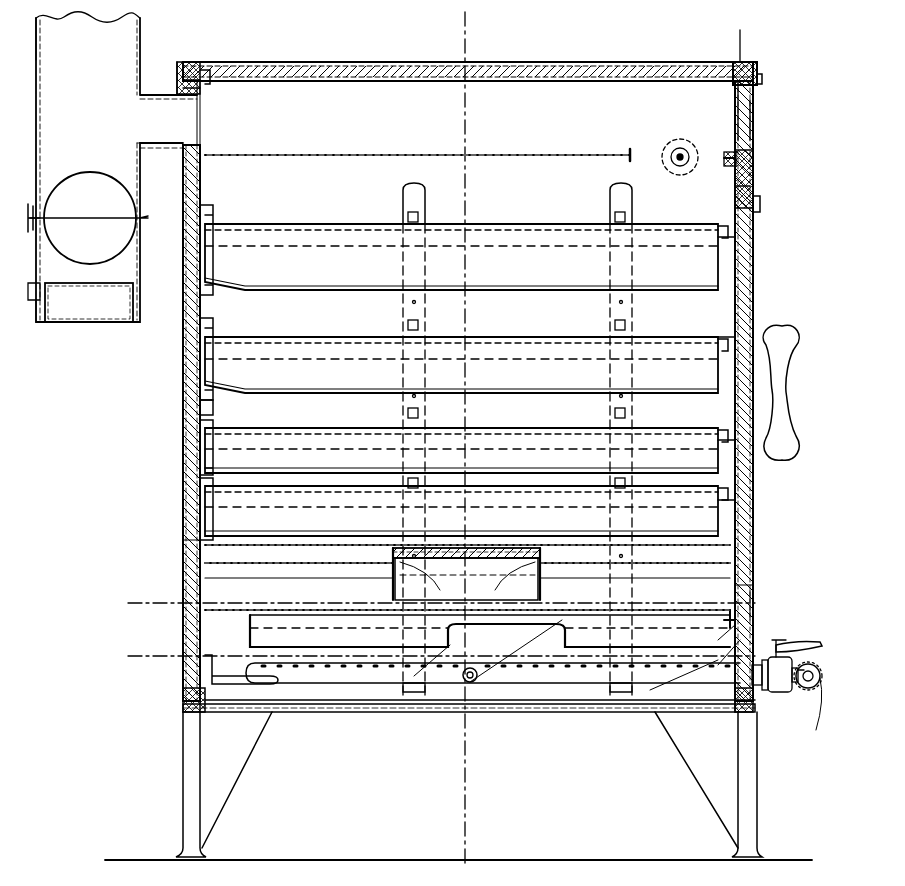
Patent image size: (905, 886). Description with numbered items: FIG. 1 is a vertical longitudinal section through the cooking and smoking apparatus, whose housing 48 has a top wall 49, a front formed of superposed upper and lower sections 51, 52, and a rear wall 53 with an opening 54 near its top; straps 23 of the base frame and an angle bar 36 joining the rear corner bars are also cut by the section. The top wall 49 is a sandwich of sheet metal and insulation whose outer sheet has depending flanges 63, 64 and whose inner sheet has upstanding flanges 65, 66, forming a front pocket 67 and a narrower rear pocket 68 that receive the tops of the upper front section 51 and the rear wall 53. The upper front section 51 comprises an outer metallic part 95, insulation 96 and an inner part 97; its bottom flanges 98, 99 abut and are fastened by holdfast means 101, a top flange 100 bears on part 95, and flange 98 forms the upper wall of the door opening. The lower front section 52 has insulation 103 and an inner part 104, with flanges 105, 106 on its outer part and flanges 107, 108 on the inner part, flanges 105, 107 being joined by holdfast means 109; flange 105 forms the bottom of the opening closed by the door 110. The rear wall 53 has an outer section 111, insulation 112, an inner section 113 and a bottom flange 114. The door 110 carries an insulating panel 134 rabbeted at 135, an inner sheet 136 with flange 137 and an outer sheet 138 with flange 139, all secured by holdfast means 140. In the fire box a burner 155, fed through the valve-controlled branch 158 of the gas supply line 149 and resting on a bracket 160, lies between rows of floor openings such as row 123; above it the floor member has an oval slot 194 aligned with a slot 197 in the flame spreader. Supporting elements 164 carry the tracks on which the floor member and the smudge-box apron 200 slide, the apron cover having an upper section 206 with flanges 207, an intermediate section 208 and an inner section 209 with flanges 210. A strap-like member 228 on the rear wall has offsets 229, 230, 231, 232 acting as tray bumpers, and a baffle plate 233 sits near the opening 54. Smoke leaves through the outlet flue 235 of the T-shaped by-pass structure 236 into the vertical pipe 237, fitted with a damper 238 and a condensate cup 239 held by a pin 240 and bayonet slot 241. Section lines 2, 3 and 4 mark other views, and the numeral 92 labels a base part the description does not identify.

The section line 2- 2 is at (472, 98).
The section line 3-3 / valve lever 3 is at (467, 652).
The section line 4- 4 is at (445, 604).
The strap 23 is at (203, 714).
The angle bar 36 is at (210, 82).
The housing 48 is at (432, 62).
The top wall 49 is at (594, 64).
The upper front section 51 is at (758, 118).
The lower front section 52 is at (768, 628).
The rear wall 53 is at (175, 348).
The opening 54 is at (204, 104).
The depending flange 63 is at (762, 78).
The depending flange 64 is at (180, 82).
The upstanding flange 65 is at (725, 66).
The upstanding flange 66 is at (192, 64).
The pocket 67 is at (757, 66).
The pocket 68 is at (178, 66).
The legs 92 is at (458, 799).
The metallic outer part 95 is at (753, 95).
The intermediate insulating part 96 is at (735, 118).
The metallic inner part 97 is at (735, 100).
The inwardly extending flange 98 is at (753, 140).
The inwardly extending flange 99 is at (735, 158).
The outwardly directed flange 100 is at (739, 35).
The holdfast means 101 is at (728, 166).
The intermediate insulating part 103 is at (730, 662).
The metallic inner part 104 is at (668, 712).
The inwardly extending flange 105 is at (752, 650).
The inwardly extending flange 106 is at (756, 718).
The inwardly extending flange 107 is at (738, 640).
The outwardly directed flange 108 is at (760, 702).
The holdfast means 109 is at (718, 628).
The door 110 is at (763, 504).
The outer metallic section 111 is at (186, 508).
The intermediate section of insulating material 112 is at (188, 538).
The inner metallic section 113 is at (192, 458).
The inwardly extending flange 114 is at (186, 714).
The row of spaced openings 123 is at (466, 712).
The panel of insulation material 134 is at (752, 480).
The rabbet 135 is at (756, 198).
The metallic sheet 136 is at (736, 300).
The flange 137 is at (756, 608).
The metallic sheet 138 is at (756, 286).
The flange 139 is at (736, 182).
The holdfast means 140 is at (760, 584).
The gas supply line 149 is at (818, 700).
The burner 155 is at (374, 686).
The valve controlled branch 158 is at (792, 701).
The bracket 160 is at (256, 686).
The supporting elements 164 is at (420, 200).
The oval-shaped slot 194 is at (560, 622).
The transverse slot 197 is at (470, 682).
The plate or apron 200 is at (650, 564).
The upper section 206 is at (520, 548).
The depending side flanges 207 is at (393, 552).
The intermediate section 208 is at (474, 548).
The inner section 209 is at (542, 596).
The depending side flanges 210 is at (466, 579).
The strap-like member 228 is at (200, 408).
The offset part 229 is at (212, 548).
The offset part 230 is at (214, 430).
The offset part 231 is at (214, 330).
The offset part 232 is at (214, 218).
The baffle plate 233 is at (460, 152).
The outlet flue 235 is at (162, 100).
The by-pass structure 236 is at (50, 102).
The vertical pipe 237 is at (42, 64).
The damper 238 is at (84, 172).
The cup 239 is at (88, 305).
The pin 240 is at (36, 306).
The bayonet slot 241 is at (34, 284).